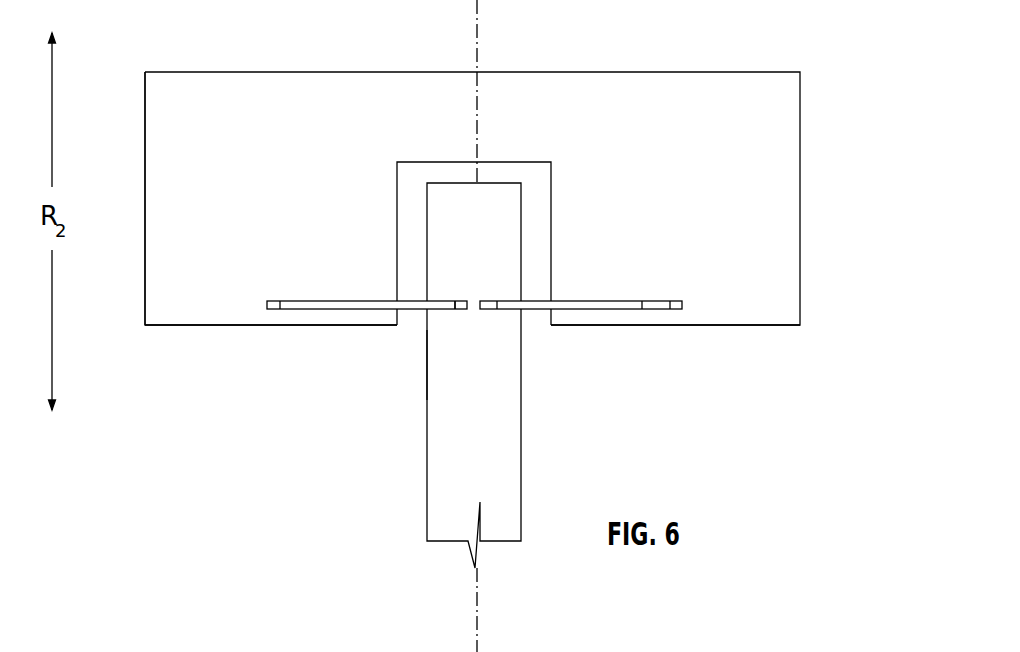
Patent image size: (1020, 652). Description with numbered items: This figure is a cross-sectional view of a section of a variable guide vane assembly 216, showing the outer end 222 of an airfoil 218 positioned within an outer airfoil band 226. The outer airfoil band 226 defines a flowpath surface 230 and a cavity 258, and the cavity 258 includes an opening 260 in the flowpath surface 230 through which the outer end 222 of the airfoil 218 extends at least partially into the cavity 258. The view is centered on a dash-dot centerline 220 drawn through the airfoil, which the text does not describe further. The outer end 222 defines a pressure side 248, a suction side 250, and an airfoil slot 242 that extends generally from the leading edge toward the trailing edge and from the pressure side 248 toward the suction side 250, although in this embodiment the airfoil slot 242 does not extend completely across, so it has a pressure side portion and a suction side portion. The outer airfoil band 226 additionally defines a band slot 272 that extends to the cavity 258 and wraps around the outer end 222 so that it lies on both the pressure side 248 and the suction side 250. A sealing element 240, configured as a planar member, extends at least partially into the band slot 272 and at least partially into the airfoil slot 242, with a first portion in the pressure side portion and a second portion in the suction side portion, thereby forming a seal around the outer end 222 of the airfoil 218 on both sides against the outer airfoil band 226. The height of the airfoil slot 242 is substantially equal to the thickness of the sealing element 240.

The variable guide vane assembly 216 is at (845, 92).
The airfoil 218 is at (505, 467).
The central axis 220 is at (477, 4).
The outer end 222 is at (415, 358).
The outer airfoil band 226 is at (159, 182).
The flowpath surface 230 is at (193, 330).
The sealing element 240 is at (340, 304).
The airfoil slot 242 is at (462, 312).
The pressure side 248 is at (558, 415).
The suction side 250 is at (392, 458).
The cavity 258 is at (537, 217).
The opening 260 is at (538, 324).
The band slot 272 is at (303, 312).